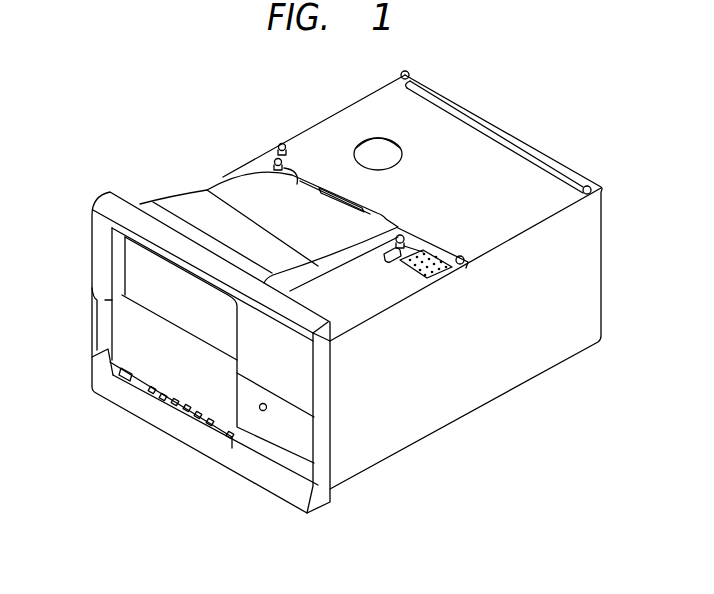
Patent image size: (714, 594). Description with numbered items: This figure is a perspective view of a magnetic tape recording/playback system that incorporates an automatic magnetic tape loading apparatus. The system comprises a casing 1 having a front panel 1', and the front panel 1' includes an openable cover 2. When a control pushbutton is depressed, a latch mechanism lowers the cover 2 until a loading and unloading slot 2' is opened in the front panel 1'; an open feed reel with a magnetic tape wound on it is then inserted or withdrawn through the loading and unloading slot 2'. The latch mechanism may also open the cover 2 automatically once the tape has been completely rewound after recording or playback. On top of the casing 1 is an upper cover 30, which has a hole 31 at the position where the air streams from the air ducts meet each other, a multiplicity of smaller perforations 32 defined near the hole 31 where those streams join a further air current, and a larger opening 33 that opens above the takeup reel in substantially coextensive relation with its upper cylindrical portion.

The casing 1 is at (412, 280).
The front panel 1' is at (191, 352).
The openable cover 2 is at (194, 353).
The loading and unloading slot 2' is at (183, 340).
The upper cover 30 is at (307, 138).
The hole 31 is at (388, 258).
The smaller perforations 32 is at (437, 260).
The larger opening 33 is at (368, 138).